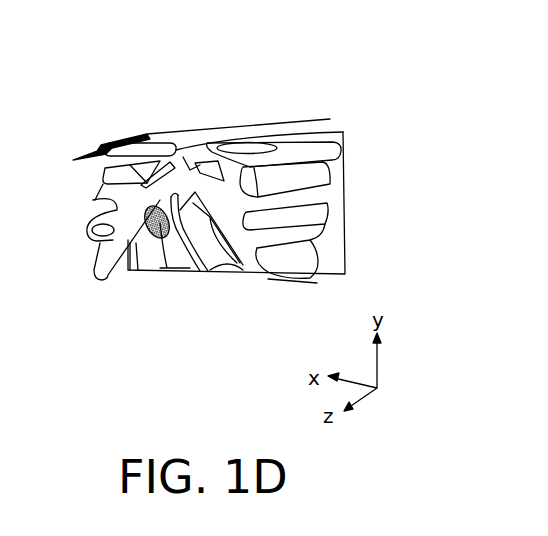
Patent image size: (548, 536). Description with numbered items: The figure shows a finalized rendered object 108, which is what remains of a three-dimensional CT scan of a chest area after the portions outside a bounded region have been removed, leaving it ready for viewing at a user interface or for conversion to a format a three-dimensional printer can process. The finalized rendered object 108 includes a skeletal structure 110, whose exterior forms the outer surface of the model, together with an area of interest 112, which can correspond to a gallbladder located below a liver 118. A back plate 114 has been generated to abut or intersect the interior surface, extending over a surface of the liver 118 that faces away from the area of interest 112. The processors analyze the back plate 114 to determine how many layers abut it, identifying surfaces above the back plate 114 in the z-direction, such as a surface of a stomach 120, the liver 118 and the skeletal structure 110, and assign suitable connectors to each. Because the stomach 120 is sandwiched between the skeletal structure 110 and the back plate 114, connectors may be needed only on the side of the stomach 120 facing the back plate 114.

The finalized rendered object 108 is at (110, 114).
The skeletal structure 110 is at (183, 131).
The area of interest 112 is at (157, 250).
The back plate 114 is at (334, 120).
The liver 118 is at (250, 142).
The stomach 120 is at (317, 284).